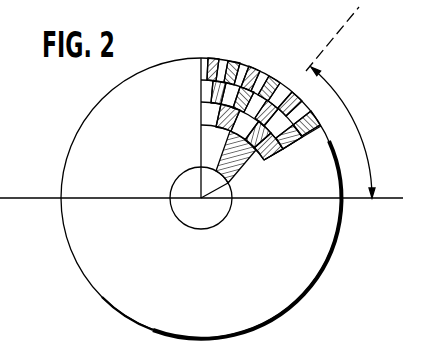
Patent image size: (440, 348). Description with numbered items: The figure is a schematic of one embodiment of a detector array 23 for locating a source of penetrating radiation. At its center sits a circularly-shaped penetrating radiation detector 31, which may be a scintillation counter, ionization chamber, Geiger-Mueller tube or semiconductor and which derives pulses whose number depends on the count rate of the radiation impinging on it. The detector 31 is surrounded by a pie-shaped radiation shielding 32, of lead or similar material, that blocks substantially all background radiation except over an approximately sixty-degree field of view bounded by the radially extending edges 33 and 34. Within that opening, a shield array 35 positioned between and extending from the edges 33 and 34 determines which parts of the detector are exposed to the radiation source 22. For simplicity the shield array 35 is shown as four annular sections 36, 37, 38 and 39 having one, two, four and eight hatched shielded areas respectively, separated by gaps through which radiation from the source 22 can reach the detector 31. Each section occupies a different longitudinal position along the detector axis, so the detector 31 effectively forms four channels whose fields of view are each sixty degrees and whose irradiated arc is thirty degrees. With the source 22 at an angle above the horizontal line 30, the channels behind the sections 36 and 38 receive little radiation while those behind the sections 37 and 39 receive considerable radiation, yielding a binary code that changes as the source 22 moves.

The radiation source 22 is at (358, 5).
The detector array 23 is at (71, 121).
The horizontal line 30 is at (392, 199).
The penetrating radiation detector 31 is at (180, 175).
The radiation shielding 32 is at (72, 161).
The radially extending edge 33 is at (199, 83).
The radially extending edge 34 is at (324, 140).
The shield array 35 is at (148, 117).
The annular shield section 36 is at (242, 168).
The annular shield section 37 is at (272, 160).
The annular shield section 38 is at (296, 150).
The annular shield section 39 is at (246, 63).